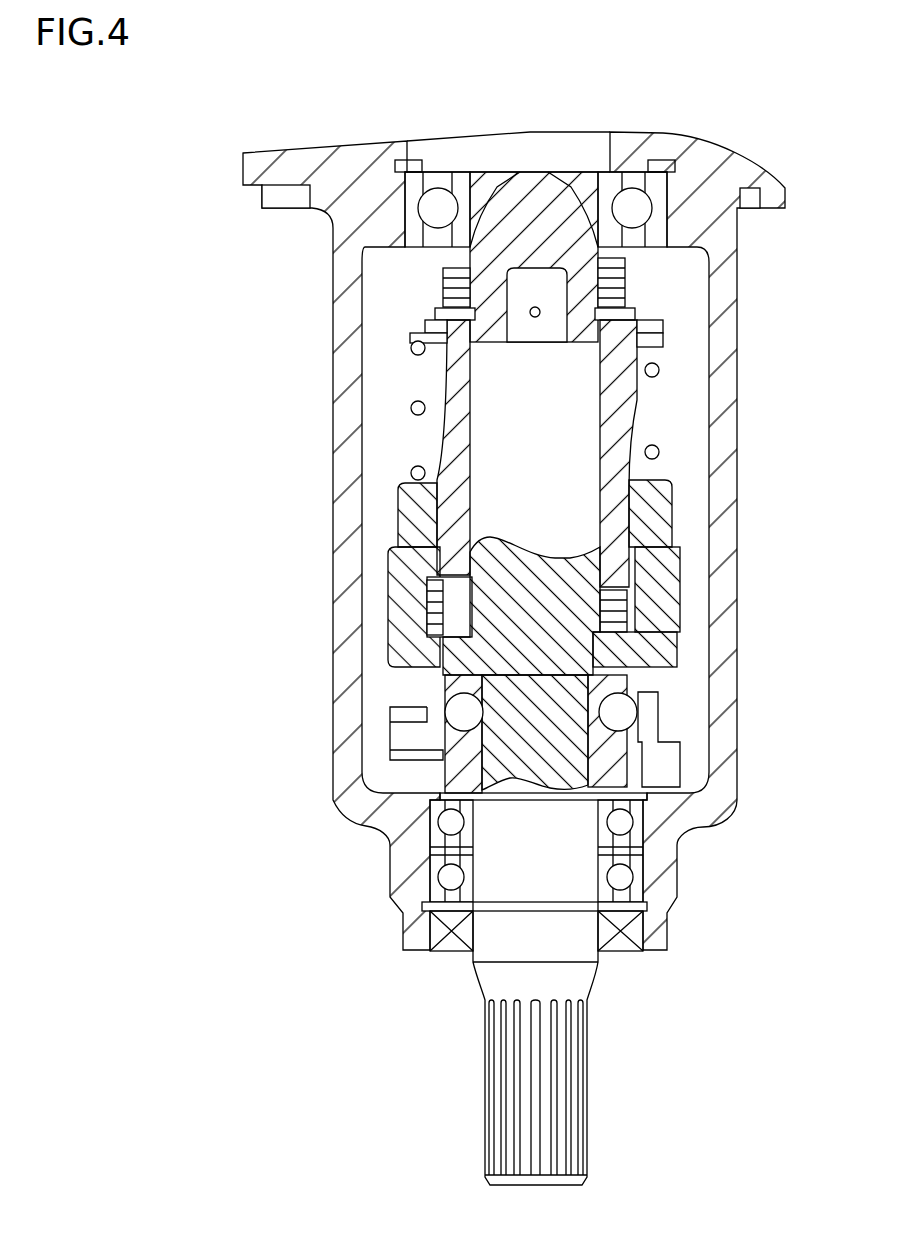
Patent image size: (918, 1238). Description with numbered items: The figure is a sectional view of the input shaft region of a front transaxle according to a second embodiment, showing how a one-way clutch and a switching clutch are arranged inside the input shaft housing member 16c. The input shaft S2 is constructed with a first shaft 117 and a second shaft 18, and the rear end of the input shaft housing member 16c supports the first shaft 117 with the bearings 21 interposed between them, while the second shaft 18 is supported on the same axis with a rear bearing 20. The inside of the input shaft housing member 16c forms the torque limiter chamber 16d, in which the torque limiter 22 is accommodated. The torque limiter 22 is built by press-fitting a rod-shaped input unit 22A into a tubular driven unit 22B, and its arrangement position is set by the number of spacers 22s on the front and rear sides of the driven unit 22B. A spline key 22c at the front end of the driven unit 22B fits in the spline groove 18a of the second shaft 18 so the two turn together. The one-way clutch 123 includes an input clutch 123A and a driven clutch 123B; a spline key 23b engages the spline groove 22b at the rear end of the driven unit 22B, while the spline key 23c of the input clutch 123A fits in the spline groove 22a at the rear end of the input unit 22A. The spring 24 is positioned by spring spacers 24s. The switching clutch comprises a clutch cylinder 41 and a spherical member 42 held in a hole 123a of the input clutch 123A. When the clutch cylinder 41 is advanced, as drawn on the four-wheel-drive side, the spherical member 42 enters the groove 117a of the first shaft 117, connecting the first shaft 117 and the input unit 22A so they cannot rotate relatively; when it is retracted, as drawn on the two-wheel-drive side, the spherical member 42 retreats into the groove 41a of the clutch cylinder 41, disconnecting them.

The rear bearing 20 is at (413, 192).
The input shaft housing member 16c is at (345, 282).
The torque limiter chamber 16d is at (382, 390).
The spline groove 18a is at (482, 277).
The spline key 22c is at (440, 318).
The spring 24 is at (413, 413).
The driven unit 22B is at (398, 488).
The input unit 22A is at (500, 505).
The torque limiter 22 is at (268, 466).
The spline key 23b is at (397, 540).
The driven clutch 123B is at (440, 580).
The input clutch 123A is at (430, 630).
The one-way clutch 123 is at (265, 600).
The input shaft S2 is at (160, 594).
The second shaft 18 is at (493, 253).
The first shaft 117 is at (507, 970).
The spacers 22s is at (612, 283).
The spring spacers 24s is at (662, 335).
The spline groove 22b is at (630, 473).
The spline groove 22a is at (607, 632).
The groove 41a is at (633, 685).
The spherical member 42 is at (617, 717).
The spline key 23c is at (422, 688).
The clutch cylinder 41 is at (440, 700).
The hole 123a is at (395, 700).
The groove 117a is at (403, 767).
The bearings 21 is at (438, 892).